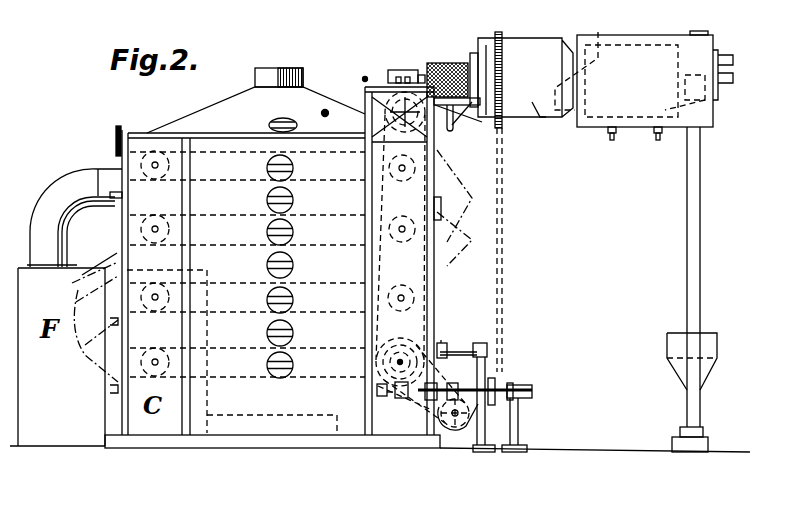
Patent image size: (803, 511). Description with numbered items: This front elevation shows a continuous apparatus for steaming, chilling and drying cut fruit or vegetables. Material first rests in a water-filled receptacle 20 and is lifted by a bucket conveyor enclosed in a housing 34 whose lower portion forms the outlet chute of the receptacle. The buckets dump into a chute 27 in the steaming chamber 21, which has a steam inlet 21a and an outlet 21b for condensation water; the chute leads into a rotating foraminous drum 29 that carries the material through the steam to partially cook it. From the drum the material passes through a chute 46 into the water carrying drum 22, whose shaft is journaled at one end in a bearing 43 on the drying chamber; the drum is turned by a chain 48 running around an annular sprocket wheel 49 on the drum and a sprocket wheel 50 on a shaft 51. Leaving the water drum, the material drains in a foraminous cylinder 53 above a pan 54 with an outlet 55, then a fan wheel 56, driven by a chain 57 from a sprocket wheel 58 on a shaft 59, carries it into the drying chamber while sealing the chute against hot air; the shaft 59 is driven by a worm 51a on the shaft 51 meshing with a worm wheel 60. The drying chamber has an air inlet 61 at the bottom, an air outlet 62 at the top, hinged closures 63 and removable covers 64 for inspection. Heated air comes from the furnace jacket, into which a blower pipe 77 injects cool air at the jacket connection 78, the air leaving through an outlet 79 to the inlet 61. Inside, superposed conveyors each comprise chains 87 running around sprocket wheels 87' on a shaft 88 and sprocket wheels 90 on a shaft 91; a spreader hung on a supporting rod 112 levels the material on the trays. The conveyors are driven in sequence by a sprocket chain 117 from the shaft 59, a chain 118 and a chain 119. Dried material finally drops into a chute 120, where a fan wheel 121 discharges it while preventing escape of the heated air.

The receptacle 20 is at (717, 345).
The steaming chamber 21 is at (642, 128).
The steam inlet 21a is at (607, 138).
The outlet 21b is at (660, 142).
The water carrying drum 22 is at (535, 43).
The chute 27 is at (717, 108).
The foraminous drum 29 is at (615, 40).
The housing 34 is at (700, 258).
The bearing 43 is at (403, 70).
The chute 46 is at (579, 63).
The chain 48 is at (502, 192).
The annular sprocket wheel 49 is at (497, 32).
The sprocket wheel 50 is at (503, 387).
The shaft 51 is at (480, 402).
The worm 51a is at (416, 402).
The foraminous cylinder 53 is at (440, 63).
The pan 54 is at (500, 130).
The outlet 55 is at (370, 102).
The fan wheel 56 is at (380, 82).
The chain 57 is at (430, 300).
The sprocket wheel 58 is at (394, 391).
The shaft 59 is at (399, 363).
The worm wheel 60 is at (376, 343).
The inlet 61 is at (328, 434).
The outlet 62 is at (283, 70).
The hinged closures 63 is at (78, 280).
The removable covers 64 is at (292, 288).
The pipe 77 is at (100, 167).
The jacket connection 78 is at (30, 236).
The outlet 79 is at (213, 434).
The chains 87 is at (247, 264).
The sprocket wheels 87' is at (405, 254).
The shaft 88 is at (388, 168).
The sprocket wheels 90 is at (156, 180).
The shaft 91 is at (157, 231).
The supporting rod 112 is at (322, 111).
The sprocket chain 117 is at (420, 345).
The chain 118 is at (413, 262).
The chain 119 is at (415, 182).
The chute 120 is at (415, 426).
The fan wheel 121 is at (457, 433).